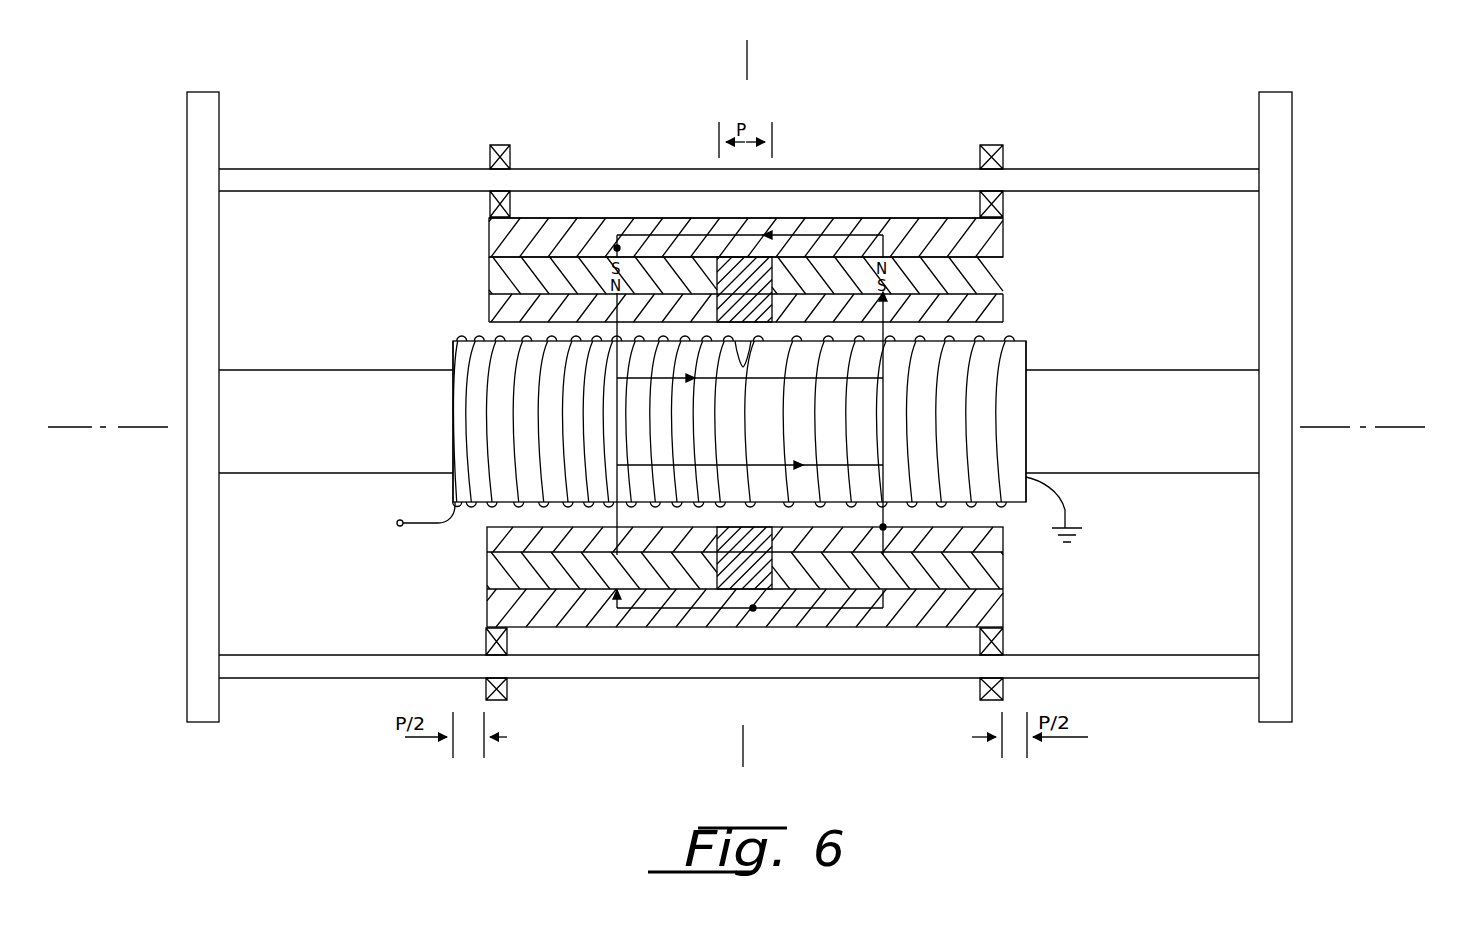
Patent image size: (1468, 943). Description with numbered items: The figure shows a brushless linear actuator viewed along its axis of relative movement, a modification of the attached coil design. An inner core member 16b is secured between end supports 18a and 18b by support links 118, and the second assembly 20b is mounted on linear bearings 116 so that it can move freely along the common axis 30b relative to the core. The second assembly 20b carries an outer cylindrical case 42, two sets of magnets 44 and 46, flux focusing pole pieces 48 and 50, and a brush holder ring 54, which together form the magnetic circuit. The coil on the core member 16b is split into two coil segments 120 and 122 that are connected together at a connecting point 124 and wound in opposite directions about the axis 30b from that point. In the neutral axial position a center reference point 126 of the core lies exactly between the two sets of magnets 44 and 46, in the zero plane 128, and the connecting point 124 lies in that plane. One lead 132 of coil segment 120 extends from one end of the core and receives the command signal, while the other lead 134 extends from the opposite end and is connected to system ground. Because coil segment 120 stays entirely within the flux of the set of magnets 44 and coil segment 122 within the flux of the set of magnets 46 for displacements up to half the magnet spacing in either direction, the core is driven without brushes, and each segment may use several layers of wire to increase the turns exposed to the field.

The inner core member 16b is at (472, 491).
The end support 18a is at (220, 124).
The end support 18b is at (1259, 138).
The second assembly 20b is at (1008, 233).
The common axis 30b is at (137, 423).
The outer cylindrical case 42 is at (489, 236).
The set of magnets 44 is at (492, 277).
The set of magnets 46 is at (992, 277).
The flux focusing pole piece 48 is at (500, 310).
The flux focusing pole piece 50 is at (992, 306).
The brush holder ring 54 is at (742, 272).
The linear bearing 116 is at (490, 151).
The support link 118 is at (332, 372).
The coil segment 120 is at (475, 417).
The coil segment 122 is at (997, 418).
The connecting point 124 is at (743, 367).
The center reference point 126 is at (744, 420).
The zero plane 128 is at (747, 50).
The lead 132 is at (433, 518).
The lead 134 is at (1064, 506).